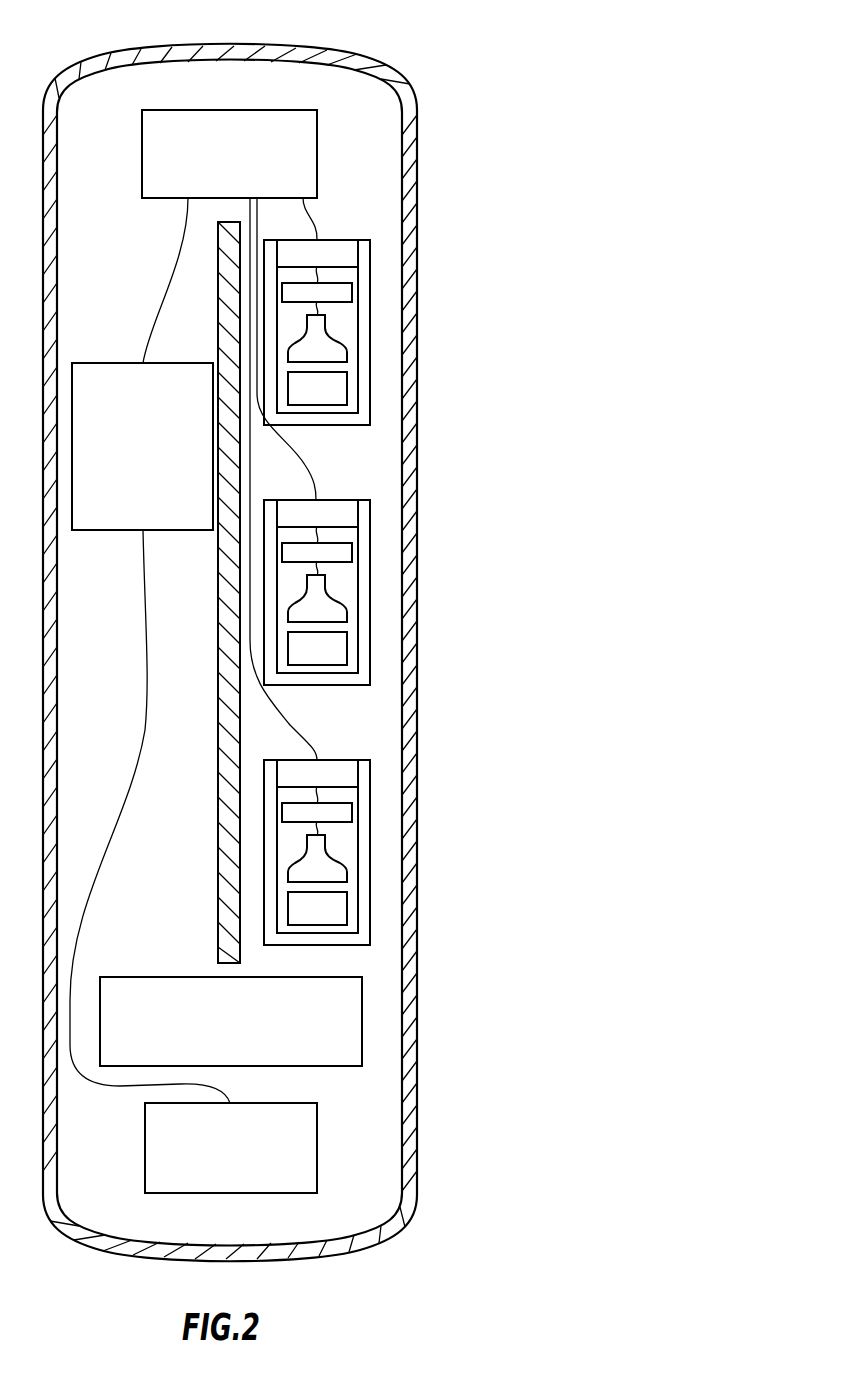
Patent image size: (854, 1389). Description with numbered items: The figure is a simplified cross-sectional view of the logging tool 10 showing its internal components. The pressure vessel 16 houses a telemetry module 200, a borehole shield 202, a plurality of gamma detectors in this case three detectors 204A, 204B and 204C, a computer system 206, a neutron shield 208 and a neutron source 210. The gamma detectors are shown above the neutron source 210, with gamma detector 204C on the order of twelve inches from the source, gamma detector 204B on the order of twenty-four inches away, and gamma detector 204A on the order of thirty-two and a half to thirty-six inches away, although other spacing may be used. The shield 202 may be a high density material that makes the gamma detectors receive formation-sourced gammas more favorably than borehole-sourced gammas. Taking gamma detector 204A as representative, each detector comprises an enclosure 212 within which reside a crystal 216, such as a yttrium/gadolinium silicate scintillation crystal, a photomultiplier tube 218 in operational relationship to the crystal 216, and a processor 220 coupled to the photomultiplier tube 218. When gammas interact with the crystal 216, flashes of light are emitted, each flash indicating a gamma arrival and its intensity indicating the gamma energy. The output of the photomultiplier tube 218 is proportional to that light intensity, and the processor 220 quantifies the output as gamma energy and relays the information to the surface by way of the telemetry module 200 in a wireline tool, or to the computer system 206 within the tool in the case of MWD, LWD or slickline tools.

The logging tool 10 is at (538, 82).
The pressure vessel 16 is at (417, 247).
The telemetry module 200 is at (162, 198).
The borehole shield 202 is at (217, 340).
The gamma detector 204A is at (372, 335).
The gamma detector 204B is at (372, 590).
The gamma detector 204C is at (372, 846).
The computer system 206 is at (123, 490).
The neutron shield 208 is at (363, 1000).
The neutron source 210 is at (317, 1140).
The enclosure 212 is at (363, 300).
The crystal 216 is at (337, 393).
The photomultiplier tube 218 is at (347, 354).
The processor 220 is at (288, 290).